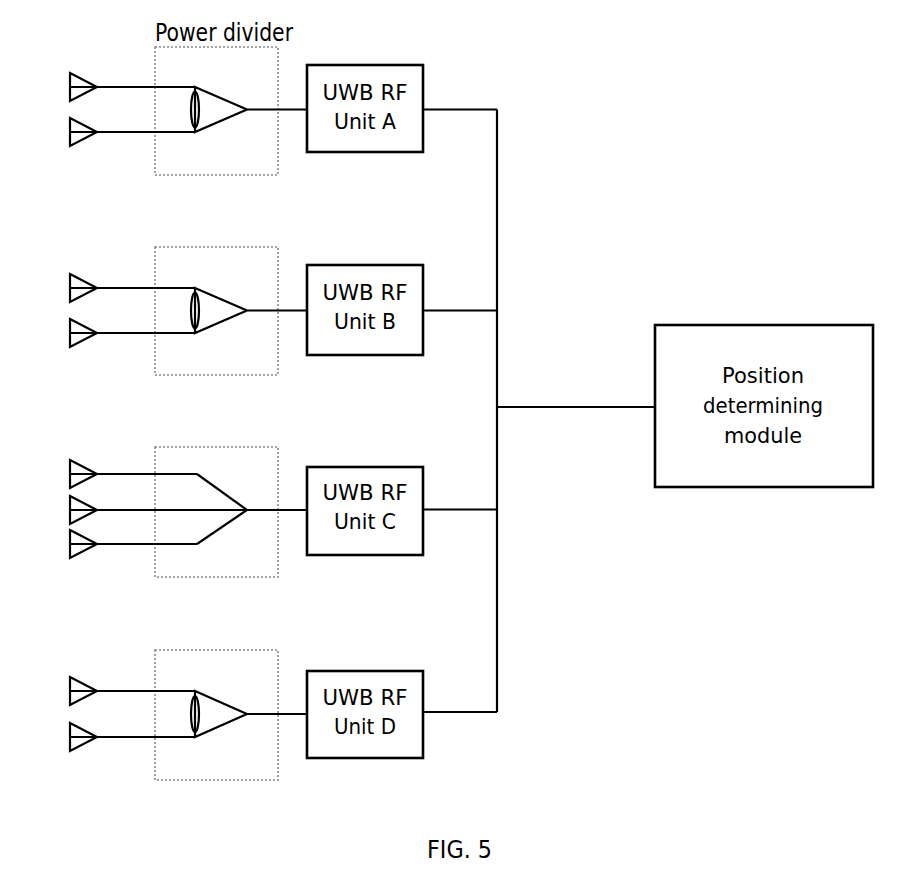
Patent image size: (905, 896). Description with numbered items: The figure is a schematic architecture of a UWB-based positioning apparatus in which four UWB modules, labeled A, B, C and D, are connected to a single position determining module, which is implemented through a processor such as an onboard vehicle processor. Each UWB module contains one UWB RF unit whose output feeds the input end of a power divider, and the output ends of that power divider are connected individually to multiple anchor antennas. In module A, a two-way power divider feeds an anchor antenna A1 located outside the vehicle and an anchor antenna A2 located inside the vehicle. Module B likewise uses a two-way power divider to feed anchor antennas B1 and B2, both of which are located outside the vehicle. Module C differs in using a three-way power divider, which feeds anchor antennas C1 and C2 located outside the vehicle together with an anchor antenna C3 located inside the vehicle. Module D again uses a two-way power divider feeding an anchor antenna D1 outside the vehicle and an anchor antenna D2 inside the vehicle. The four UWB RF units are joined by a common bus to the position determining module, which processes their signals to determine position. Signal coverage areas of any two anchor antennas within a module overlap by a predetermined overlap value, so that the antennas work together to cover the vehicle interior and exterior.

The anchor antenna A1 is at (111, 87).
The anchor antenna A2 is at (111, 132).
The anchor antenna B1 is at (111, 288).
The anchor antenna B2 is at (111, 333).
The anchor antenna C1 is at (112, 474).
The anchor antenna C2 is at (167, 510).
The anchor antenna C3 is at (112, 544).
The anchor antenna D1 is at (111, 691).
The anchor antenna D2 is at (111, 737).